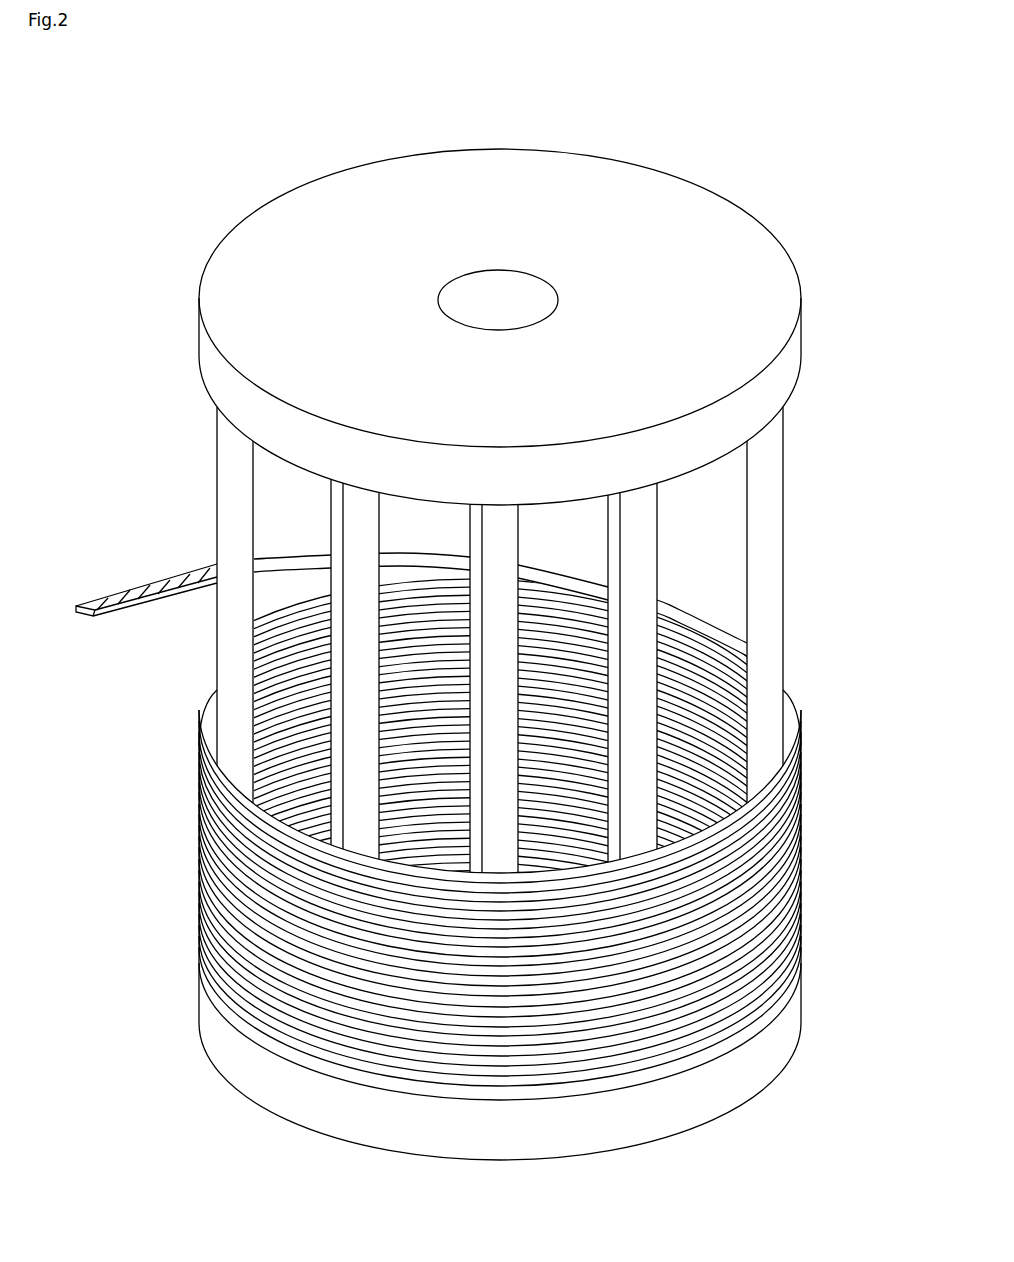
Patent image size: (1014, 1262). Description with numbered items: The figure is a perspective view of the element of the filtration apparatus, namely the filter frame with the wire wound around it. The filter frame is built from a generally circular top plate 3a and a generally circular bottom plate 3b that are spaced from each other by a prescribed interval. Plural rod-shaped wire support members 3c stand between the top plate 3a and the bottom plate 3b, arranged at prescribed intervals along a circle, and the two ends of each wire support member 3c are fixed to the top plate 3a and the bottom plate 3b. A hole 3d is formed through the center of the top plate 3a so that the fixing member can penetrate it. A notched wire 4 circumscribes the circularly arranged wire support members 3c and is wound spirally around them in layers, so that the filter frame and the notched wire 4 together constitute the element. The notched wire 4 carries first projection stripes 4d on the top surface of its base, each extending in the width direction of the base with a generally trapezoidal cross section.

The top plate 3a is at (697, 225).
The bottom plate 3b is at (693, 1093).
The wire support members 3c is at (642, 550).
The hole 3d is at (474, 288).
The notched wire 4 is at (792, 732).
The first projection stripes 4d is at (124, 590).